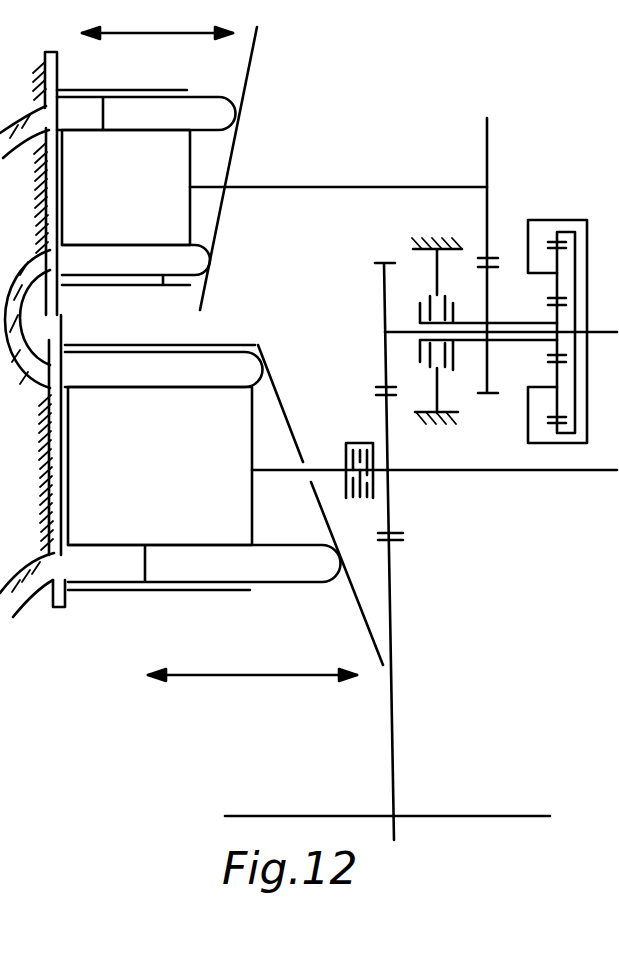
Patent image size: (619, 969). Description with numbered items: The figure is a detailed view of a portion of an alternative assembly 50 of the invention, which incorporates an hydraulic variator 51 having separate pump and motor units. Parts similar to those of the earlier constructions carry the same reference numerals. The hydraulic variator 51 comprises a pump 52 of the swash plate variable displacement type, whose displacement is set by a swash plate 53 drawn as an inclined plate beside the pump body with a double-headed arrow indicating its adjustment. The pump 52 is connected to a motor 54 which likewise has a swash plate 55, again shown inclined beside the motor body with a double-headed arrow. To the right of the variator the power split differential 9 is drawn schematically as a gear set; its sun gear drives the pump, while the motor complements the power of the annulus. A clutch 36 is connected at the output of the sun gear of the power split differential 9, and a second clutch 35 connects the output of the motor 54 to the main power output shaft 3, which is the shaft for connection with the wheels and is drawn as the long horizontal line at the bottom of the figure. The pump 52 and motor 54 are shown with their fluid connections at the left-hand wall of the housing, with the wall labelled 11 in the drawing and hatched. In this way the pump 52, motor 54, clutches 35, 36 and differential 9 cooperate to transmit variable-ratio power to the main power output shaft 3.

The main power output shaft 3 is at (468, 812).
The power split differential 9 is at (553, 220).
The housing wall 11 is at (32, 464).
The clutch 35 is at (360, 443).
The clutch 36 is at (410, 270).
The assembly 50 is at (450, 67).
The hydraulic variator 51 is at (268, 165).
The pump 52 is at (152, 207).
The swash plate 53 is at (262, 65).
The motor 54 is at (174, 484).
The swash plate 55 is at (347, 596).